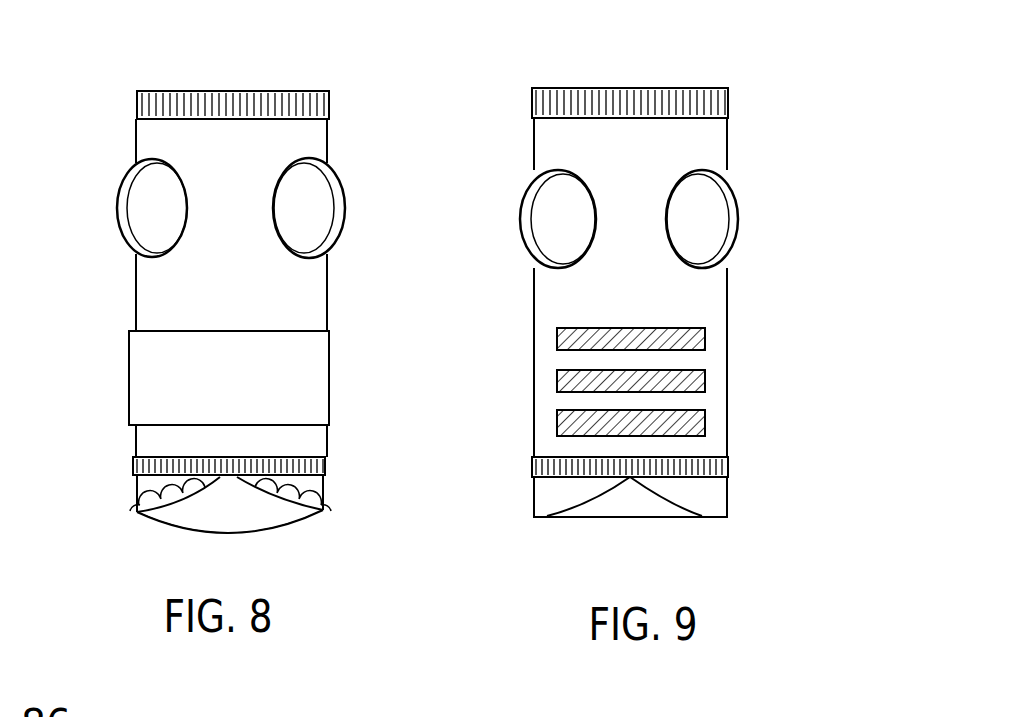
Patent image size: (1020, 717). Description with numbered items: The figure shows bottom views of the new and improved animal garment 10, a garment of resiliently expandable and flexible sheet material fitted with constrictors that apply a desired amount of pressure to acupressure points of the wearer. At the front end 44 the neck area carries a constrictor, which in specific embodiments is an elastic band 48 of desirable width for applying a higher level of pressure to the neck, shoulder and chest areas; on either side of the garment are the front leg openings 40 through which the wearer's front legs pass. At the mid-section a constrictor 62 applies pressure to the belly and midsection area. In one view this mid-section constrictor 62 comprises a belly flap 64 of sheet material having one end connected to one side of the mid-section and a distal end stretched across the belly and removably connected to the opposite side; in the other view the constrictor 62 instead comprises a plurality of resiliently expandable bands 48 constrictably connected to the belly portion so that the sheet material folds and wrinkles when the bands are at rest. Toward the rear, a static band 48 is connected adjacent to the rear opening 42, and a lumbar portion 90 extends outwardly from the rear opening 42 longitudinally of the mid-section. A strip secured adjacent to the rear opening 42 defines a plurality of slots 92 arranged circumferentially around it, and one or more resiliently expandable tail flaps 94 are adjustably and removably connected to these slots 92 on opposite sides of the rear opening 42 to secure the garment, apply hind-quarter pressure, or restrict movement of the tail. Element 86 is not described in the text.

In FIG. 8, the animal garment 10 is at (106, 302).
In FIG. 9, the animal garment 10 is at (513, 365).
In FIG. 8, the front leg openings 40 is at (150, 207).
In FIG. 9, the front leg openings 40 is at (560, 223).
In FIG. 9, the rear opening 42 is at (630, 500).
In FIG. 8, the front end 44 is at (292, 92).
In FIG. 9, the front end 44 is at (683, 88).
In FIG. 8, the elastic band 48 is at (215, 102).
In FIG. 9, the elastic band 48 is at (560, 105).
In FIG. 9, the mid-section constrictor 62 is at (705, 340).
In FIG. 8, the belly flap 64 is at (290, 382).
In FIG. 8, the base skirt 86 is at (305, 482).
In FIG. 9, the base skirt 86 is at (550, 497).
In FIG. 8, the lumbar portion 90 is at (323, 487).
In FIG. 9, the lumbar portion 90 is at (705, 495).
In FIG. 8, the slots 92 is at (170, 488).
In FIG. 8, the tail flap 94 is at (150, 527).